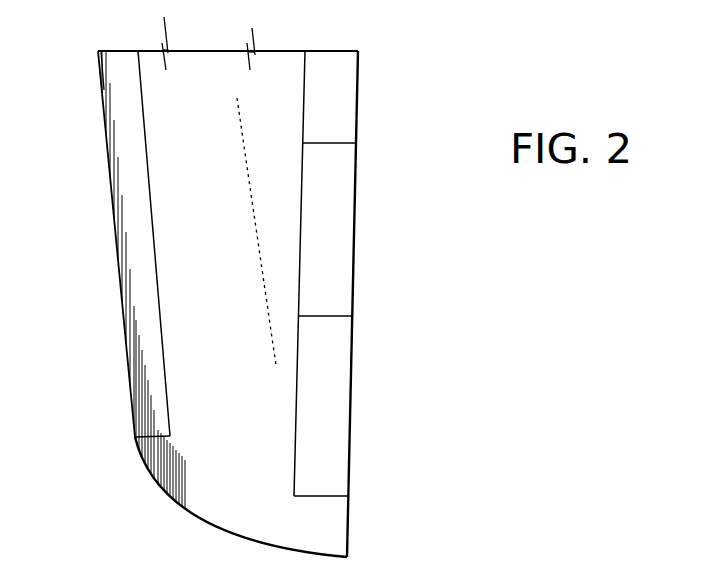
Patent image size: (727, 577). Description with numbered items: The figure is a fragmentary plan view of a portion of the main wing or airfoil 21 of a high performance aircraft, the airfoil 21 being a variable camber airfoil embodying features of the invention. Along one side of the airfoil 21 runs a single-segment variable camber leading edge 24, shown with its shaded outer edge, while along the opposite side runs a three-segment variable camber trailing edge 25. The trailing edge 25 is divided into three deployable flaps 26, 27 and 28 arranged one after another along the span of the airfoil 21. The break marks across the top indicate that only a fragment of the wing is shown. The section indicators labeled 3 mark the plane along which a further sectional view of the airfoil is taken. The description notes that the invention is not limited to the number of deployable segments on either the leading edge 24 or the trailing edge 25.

The main wing or airfoil 21 is at (262, 85).
The single-segment variable camber leading edge 24 is at (127, 368).
The three-segment variable camber trailing edge 25 is at (354, 284).
The deployable flap 26 is at (340, 113).
The deployable flap 27 is at (333, 306).
The deployable flap 28 is at (330, 446).
The section line 3- 3 is at (54, 184).